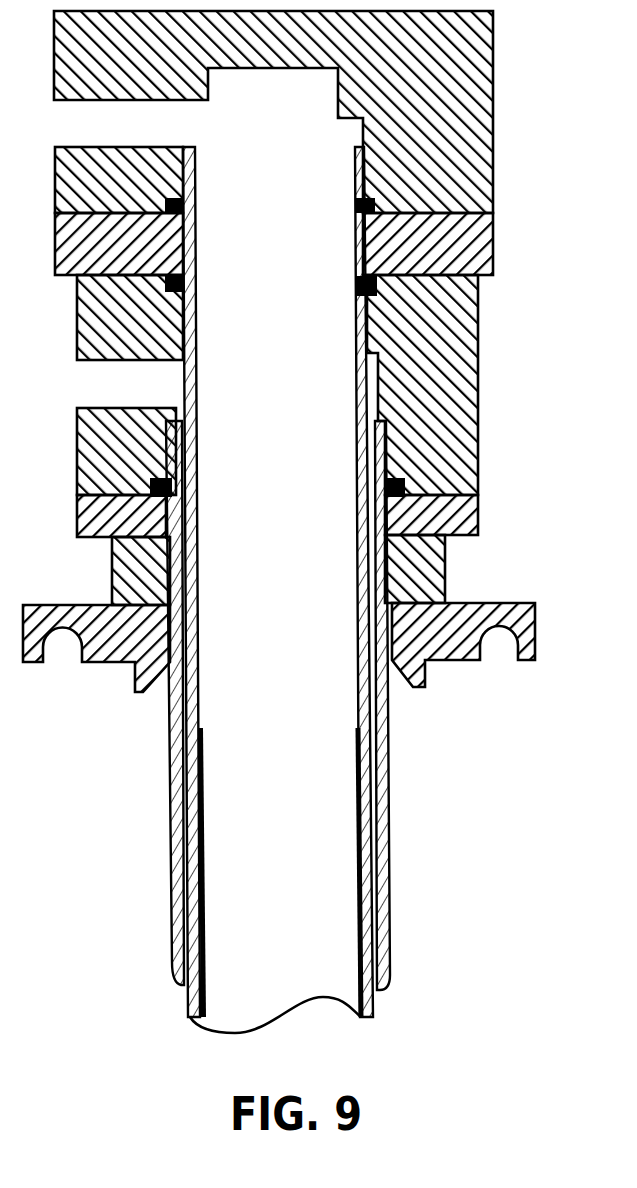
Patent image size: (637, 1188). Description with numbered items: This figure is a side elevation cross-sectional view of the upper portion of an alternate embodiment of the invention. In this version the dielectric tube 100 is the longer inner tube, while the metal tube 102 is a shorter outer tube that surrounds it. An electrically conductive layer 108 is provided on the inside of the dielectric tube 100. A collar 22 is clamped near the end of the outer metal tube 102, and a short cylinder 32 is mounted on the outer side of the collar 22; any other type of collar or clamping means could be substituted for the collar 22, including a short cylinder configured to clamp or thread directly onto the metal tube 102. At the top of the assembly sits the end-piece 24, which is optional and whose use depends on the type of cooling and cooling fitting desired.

The end-piece 24 is at (493, 60).
The short cylinder 32 is at (478, 372).
The dielectric tube 100 is at (185, 386).
The collar 22 is at (445, 578).
The metal tube 102 is at (174, 753).
The electrically conductive layer 108 is at (205, 880).